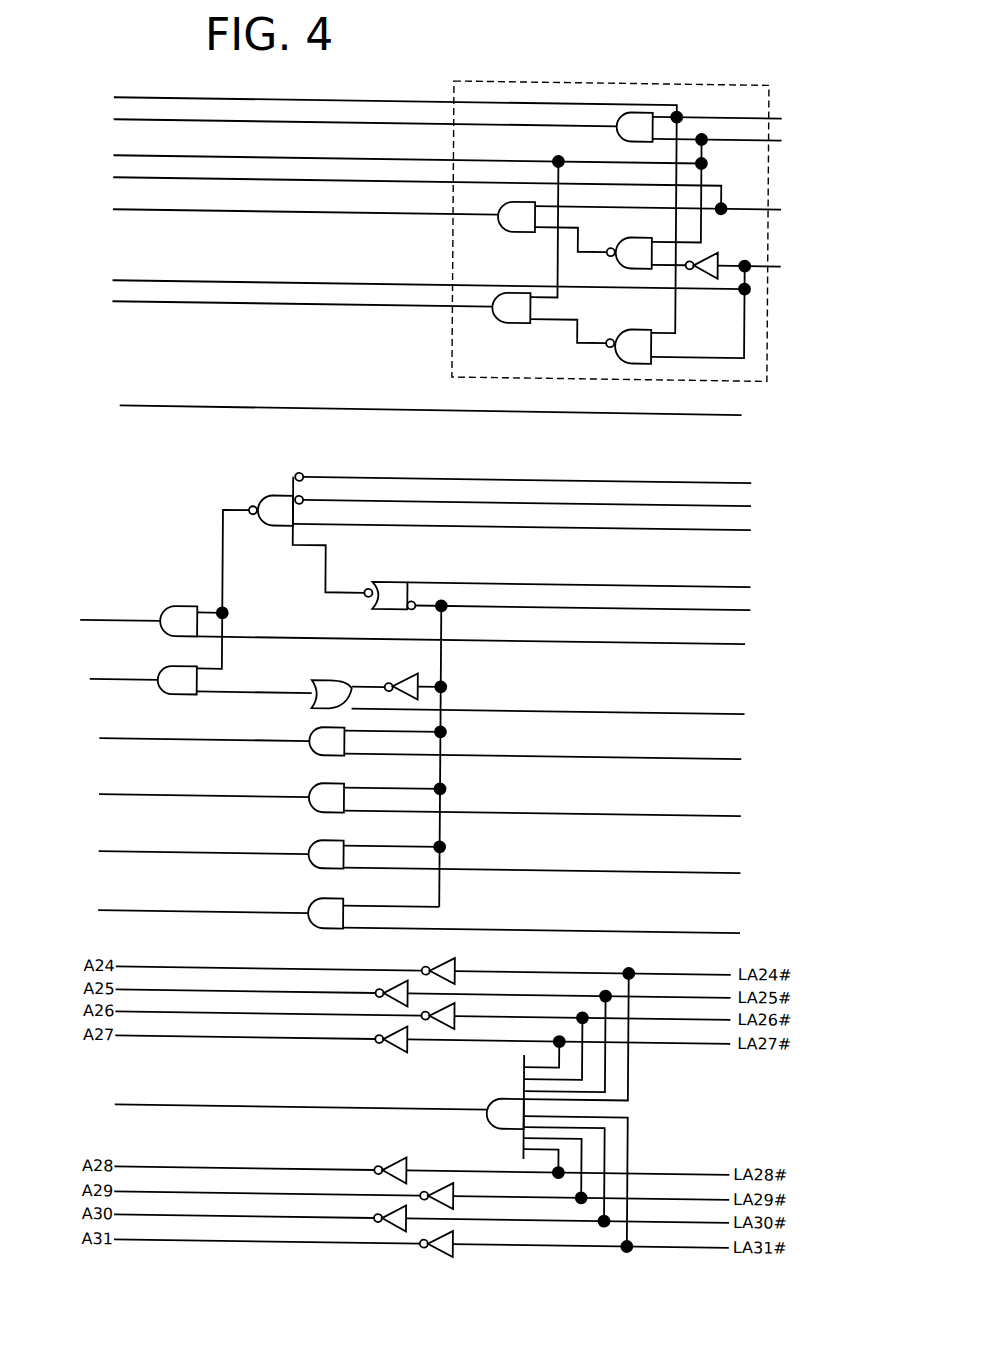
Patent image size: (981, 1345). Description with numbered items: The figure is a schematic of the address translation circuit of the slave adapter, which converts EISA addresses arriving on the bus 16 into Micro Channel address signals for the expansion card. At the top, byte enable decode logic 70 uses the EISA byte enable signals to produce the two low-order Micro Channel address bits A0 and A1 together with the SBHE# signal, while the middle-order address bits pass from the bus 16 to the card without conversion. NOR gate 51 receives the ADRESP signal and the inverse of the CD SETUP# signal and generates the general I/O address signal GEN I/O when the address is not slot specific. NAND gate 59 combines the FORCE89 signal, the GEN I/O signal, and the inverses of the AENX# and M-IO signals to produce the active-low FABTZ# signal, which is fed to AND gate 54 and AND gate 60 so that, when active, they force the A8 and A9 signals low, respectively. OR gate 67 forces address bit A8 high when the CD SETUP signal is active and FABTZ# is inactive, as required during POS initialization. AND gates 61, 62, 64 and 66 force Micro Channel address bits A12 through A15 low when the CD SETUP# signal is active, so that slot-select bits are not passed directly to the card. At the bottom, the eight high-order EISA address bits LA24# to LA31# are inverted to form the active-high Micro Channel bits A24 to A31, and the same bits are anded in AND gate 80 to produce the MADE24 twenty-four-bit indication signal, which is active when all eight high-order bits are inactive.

The byte enable decode logic 70 is at (533, 81).
The bus 16 is at (410, 423).
The NAND gate 59 is at (275, 529).
The AND gate 60 is at (419, 620).
The AND gate 54 is at (181, 669).
The NOR gate 51 is at (400, 613).
The OR gate 67 is at (330, 681).
The AND gate 61 is at (336, 728).
The AND gate 62 is at (333, 784).
The AND gate 64 is at (333, 841).
The AND gate 66 is at (333, 899).
The AND gate 80 is at (507, 1098).